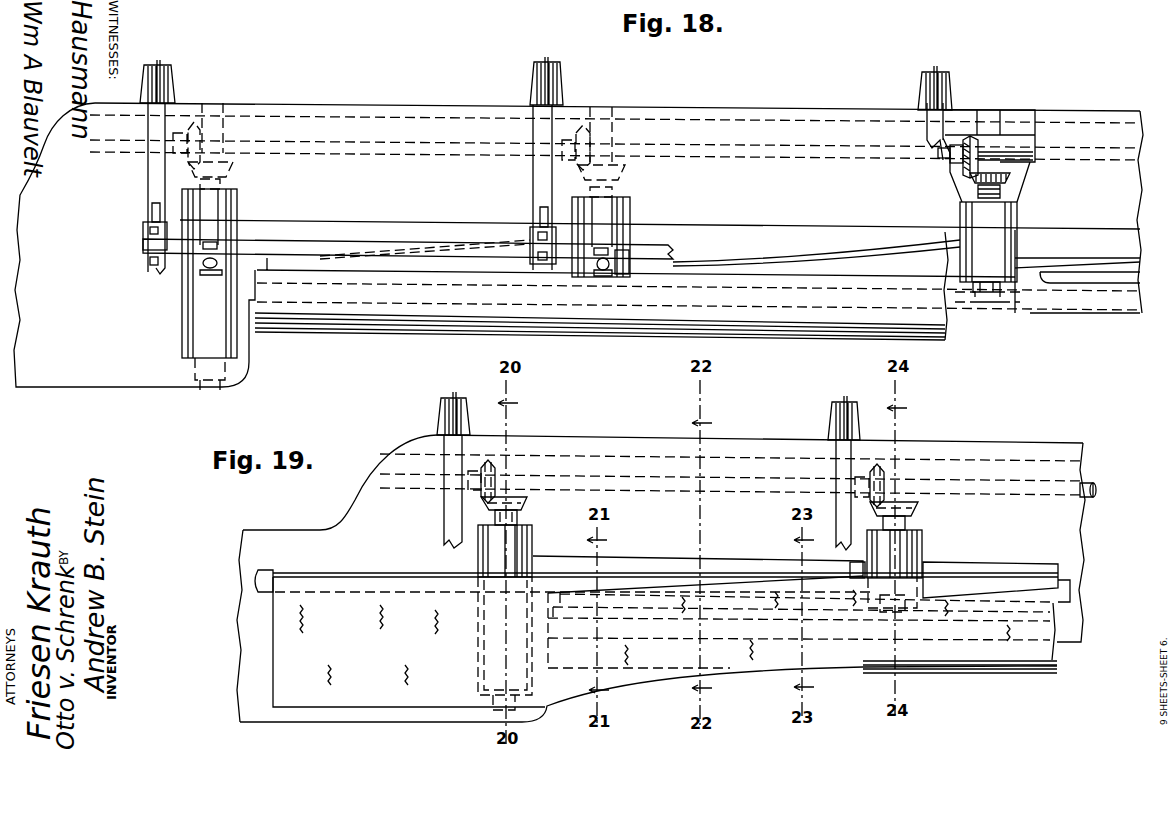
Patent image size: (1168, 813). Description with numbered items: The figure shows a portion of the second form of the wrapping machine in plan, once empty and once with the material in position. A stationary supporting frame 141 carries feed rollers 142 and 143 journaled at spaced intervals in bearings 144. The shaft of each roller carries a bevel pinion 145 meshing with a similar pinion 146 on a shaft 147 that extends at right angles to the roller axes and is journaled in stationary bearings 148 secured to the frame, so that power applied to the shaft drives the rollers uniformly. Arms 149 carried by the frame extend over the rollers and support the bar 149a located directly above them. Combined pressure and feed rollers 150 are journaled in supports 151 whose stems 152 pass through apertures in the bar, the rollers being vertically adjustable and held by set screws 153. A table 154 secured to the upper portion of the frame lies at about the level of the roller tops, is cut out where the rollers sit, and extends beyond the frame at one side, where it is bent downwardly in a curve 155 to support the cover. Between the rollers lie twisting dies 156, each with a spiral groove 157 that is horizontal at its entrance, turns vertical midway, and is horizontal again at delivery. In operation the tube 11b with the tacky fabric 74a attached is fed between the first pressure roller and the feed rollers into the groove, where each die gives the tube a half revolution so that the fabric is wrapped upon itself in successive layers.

In FIG. 19, the tube 11b is at (262, 576).
In FIG. 19, the tacky fabric 74a is at (284, 658).
In FIG. 18, the stationary supporting frame 141 is at (195, 386).
In FIG. 18, the feed roller 142 is at (221, 210).
In FIG. 19, the feed roller 142 is at (493, 557).
In FIG. 18, the feed roller 143 is at (622, 215).
In FIG. 19, the feed roller 143 is at (918, 553).
In FIG. 18, the bearing 144 is at (232, 378).
In FIG. 19, the bearing 144 is at (519, 521).
In FIG. 18, the bevel pinion 145 is at (626, 176).
In FIG. 19, the bevel pinion 145 is at (526, 506).
In FIG. 18, the bevel pinion 146 is at (186, 162).
In FIG. 19, the bevel pinion 146 is at (489, 465).
In FIG. 18, the shaft 147 is at (1004, 155).
In FIG. 19, the shaft 147 is at (1090, 488).
In FIG. 18, the stationary bearing 148 is at (944, 148).
In FIG. 18, the arm 149 is at (156, 146).
In FIG. 19, the arm 149 is at (450, 497).
In FIG. 18, the bar 149a is at (320, 250).
In FIG. 18, the combined pressure and feed roller 150 is at (201, 266).
In FIG. 18, the support 151 is at (212, 231).
In FIG. 18, the stem 152 is at (620, 272).
In FIG. 18, the set screw 153 is at (218, 272).
In FIG. 18, the table 154 is at (123, 291).
In FIG. 19, the table 154 is at (243, 650).
In FIG. 18, the downwardly bent portion 155 is at (930, 334).
In FIG. 19, the downwardly bent portion 155 is at (1000, 674).
In FIG. 18, the twisting die 156 is at (443, 230).
In FIG. 19, the twisting die 156 is at (730, 562).
In FIG. 18, the spiral groove 157 is at (826, 251).